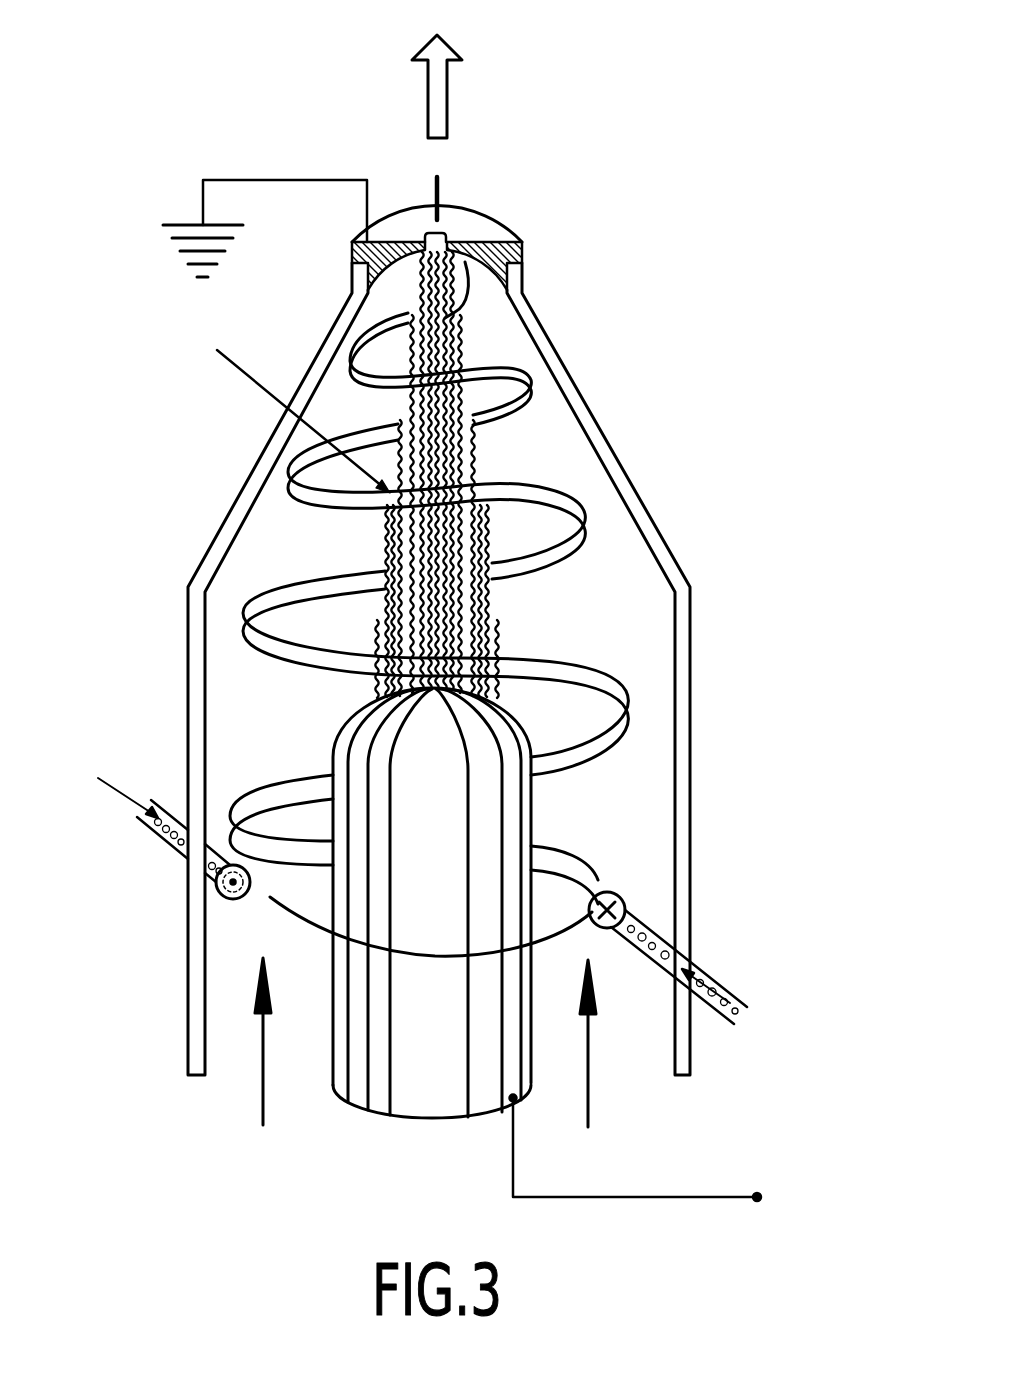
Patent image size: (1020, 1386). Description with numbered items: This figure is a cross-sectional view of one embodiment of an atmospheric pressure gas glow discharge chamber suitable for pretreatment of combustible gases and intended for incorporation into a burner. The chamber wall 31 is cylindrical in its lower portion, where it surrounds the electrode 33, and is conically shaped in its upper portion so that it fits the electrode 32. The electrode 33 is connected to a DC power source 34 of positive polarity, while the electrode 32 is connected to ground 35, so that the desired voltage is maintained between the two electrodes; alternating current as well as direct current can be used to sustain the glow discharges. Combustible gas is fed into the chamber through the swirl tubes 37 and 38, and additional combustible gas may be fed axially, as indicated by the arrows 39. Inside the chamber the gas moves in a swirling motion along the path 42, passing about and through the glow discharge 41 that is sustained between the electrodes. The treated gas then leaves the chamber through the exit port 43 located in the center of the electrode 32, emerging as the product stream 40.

The chamber wall 31 is at (690, 627).
The electrode 32 is at (523, 232).
The electrode 33 is at (531, 823).
The DC power source 34 is at (642, 1197).
The ground 35 is at (180, 237).
The swirl tube 37 is at (172, 853).
The swirl tube 38 is at (710, 973).
The arrows 39 is at (262, 1102).
The product stream 40 is at (447, 108).
The glow discharge 41 is at (483, 457).
The path 42 is at (557, 562).
The exit port 43 is at (447, 236).